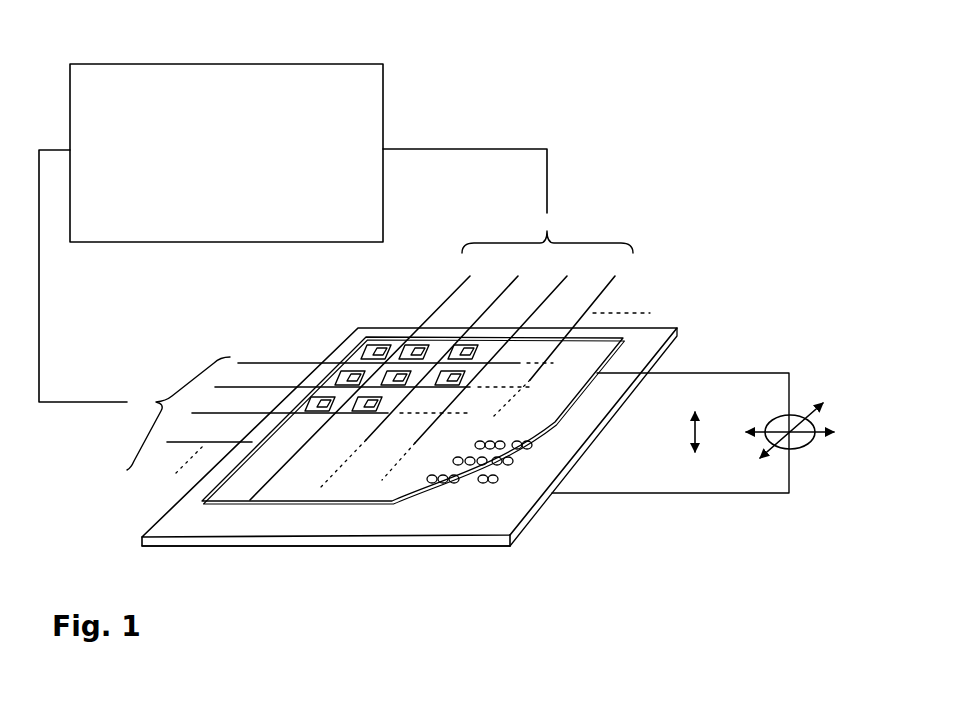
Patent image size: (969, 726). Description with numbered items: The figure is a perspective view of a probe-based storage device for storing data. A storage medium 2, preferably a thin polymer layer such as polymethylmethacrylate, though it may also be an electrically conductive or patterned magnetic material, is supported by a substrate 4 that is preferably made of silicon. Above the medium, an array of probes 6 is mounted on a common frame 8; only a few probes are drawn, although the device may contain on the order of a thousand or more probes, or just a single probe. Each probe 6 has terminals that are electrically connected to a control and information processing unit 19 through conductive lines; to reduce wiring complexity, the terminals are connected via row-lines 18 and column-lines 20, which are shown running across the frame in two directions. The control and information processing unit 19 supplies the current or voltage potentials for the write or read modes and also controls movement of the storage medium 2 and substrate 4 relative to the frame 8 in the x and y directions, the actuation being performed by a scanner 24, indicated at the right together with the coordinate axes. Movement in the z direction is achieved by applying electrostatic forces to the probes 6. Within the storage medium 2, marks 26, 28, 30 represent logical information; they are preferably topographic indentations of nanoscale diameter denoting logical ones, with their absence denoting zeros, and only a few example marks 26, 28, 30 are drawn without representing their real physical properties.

The control and information processing unit 19 is at (132, 64).
The row-lines 18 is at (282, 387).
The probe 6 is at (413, 346).
The column-lines 20 is at (550, 297).
The scanner 24 is at (812, 378).
The common frame 8 is at (228, 487).
The storage medium 2 is at (170, 517).
The substrate 4 is at (234, 547).
The mark 26 is at (443, 484).
The mark 28 is at (455, 484).
The mark 30 is at (485, 484).